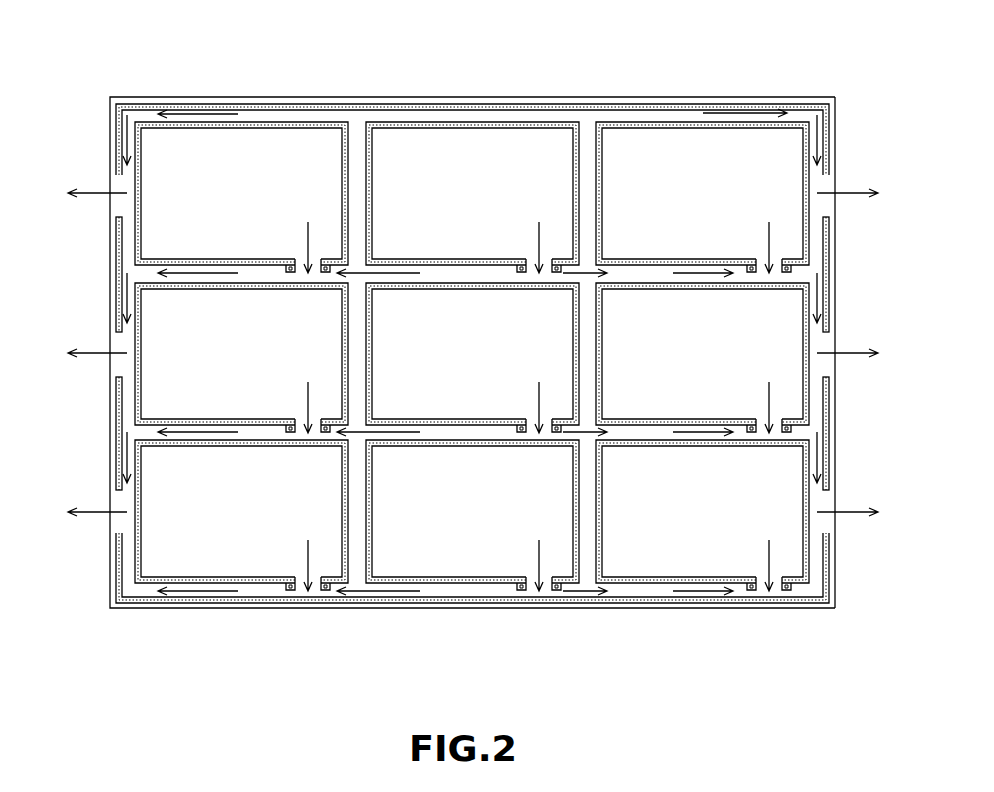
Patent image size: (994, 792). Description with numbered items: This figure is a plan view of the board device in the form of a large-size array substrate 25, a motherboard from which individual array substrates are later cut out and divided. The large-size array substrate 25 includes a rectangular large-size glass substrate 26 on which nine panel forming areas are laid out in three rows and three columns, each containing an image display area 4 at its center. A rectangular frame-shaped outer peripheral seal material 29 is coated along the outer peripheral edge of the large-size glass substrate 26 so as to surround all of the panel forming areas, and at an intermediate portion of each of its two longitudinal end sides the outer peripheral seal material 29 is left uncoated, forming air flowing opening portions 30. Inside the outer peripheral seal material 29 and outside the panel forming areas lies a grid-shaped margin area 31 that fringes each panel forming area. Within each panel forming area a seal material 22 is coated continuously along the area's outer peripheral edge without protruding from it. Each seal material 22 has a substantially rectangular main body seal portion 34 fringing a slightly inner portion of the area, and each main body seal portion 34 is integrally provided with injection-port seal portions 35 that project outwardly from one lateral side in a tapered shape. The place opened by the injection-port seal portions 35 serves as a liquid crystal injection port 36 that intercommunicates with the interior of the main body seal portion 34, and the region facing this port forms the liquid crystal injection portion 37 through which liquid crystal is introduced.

The image display area 4 is at (322, 138).
The seal material 22 is at (255, 123).
The large-size array substrate 25 is at (828, 97).
The large-size glass substrate 26 is at (840, 220).
The outer peripheral seal material 29 is at (668, 105).
The air flowing opening portion 30 is at (118, 183).
The margin area 31 is at (138, 277).
The main body seal portion 34 is at (172, 122).
The injection-port seal portion 35 is at (290, 272).
The liquid crystal injection port 36 is at (308, 273).
The liquid crystal injection portion 37 is at (313, 268).